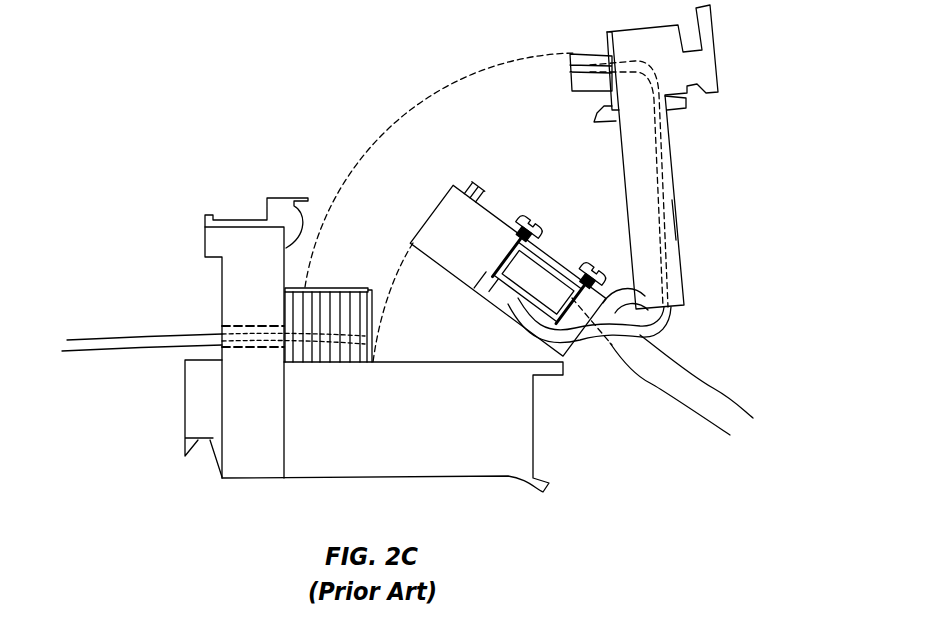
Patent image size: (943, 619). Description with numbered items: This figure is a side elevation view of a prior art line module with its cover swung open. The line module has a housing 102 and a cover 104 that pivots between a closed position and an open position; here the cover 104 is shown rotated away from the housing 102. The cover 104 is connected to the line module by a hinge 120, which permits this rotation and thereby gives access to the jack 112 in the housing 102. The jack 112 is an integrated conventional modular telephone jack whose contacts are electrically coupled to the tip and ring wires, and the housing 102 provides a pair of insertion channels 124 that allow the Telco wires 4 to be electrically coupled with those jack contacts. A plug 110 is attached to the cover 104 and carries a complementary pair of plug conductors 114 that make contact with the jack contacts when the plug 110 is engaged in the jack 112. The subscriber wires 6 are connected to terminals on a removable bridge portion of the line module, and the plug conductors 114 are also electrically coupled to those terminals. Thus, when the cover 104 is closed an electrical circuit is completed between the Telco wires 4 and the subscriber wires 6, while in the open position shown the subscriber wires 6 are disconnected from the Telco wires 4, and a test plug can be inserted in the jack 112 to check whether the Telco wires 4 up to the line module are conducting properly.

The Telco wires 4 is at (112, 335).
The subscriber wires 6 is at (717, 388).
The housing 102 is at (522, 420).
The cover 104 is at (680, 237).
The plug 110 is at (577, 53).
The jack 112 is at (312, 288).
The plug conductors 114 is at (573, 80).
The hinge 120 is at (622, 300).
The insertion channels 124 is at (240, 326).